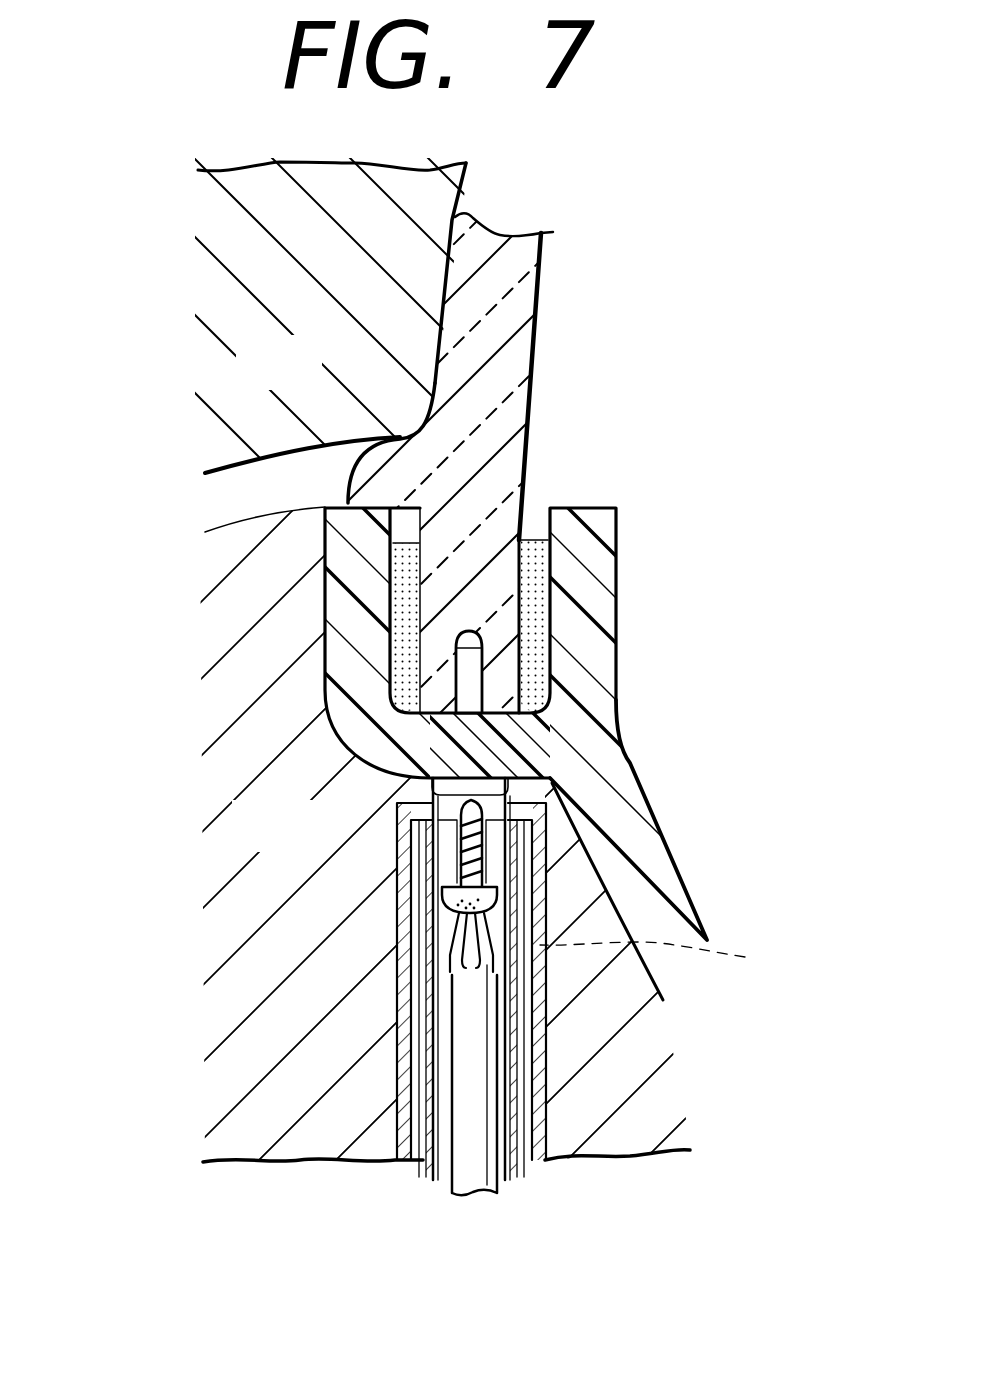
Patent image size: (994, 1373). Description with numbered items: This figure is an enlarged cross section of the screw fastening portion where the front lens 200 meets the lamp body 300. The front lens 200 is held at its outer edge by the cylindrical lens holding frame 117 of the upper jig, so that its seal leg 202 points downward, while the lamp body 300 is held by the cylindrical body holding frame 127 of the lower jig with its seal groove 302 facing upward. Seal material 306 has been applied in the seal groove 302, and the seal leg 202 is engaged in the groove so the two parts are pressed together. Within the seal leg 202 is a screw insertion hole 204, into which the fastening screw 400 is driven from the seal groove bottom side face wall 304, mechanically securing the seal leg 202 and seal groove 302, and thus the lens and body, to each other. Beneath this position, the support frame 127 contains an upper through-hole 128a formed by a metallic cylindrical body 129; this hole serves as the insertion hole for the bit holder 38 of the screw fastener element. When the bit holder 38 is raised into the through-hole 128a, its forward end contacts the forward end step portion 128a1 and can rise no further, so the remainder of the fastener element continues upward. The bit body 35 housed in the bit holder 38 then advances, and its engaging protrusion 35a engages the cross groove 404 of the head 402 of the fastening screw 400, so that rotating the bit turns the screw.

The lens holding frame 117 is at (316, 383).
The body holding frame 127 is at (312, 848).
The front lens 200 is at (540, 296).
The seal leg 202 is at (487, 597).
The screw insertion hole 204 is at (468, 667).
The lamp body 300 is at (647, 793).
The seal groove 302 is at (410, 590).
The seal groove bottom side face wall 304 is at (407, 788).
The seal material 306 is at (533, 537).
The fastening screw 400 is at (488, 858).
The head of fastening screw 402 is at (548, 915).
The cross groove 404 is at (745, 957).
The upper through-hole 128a is at (546, 1093).
The forward end step portion 128a1 is at (398, 873).
The metallic cylindrical body 129 is at (573, 1040).
The bit body 35 is at (470, 1097).
The engaging protrusion 35a is at (450, 952).
The bit holder 38 is at (440, 1062).